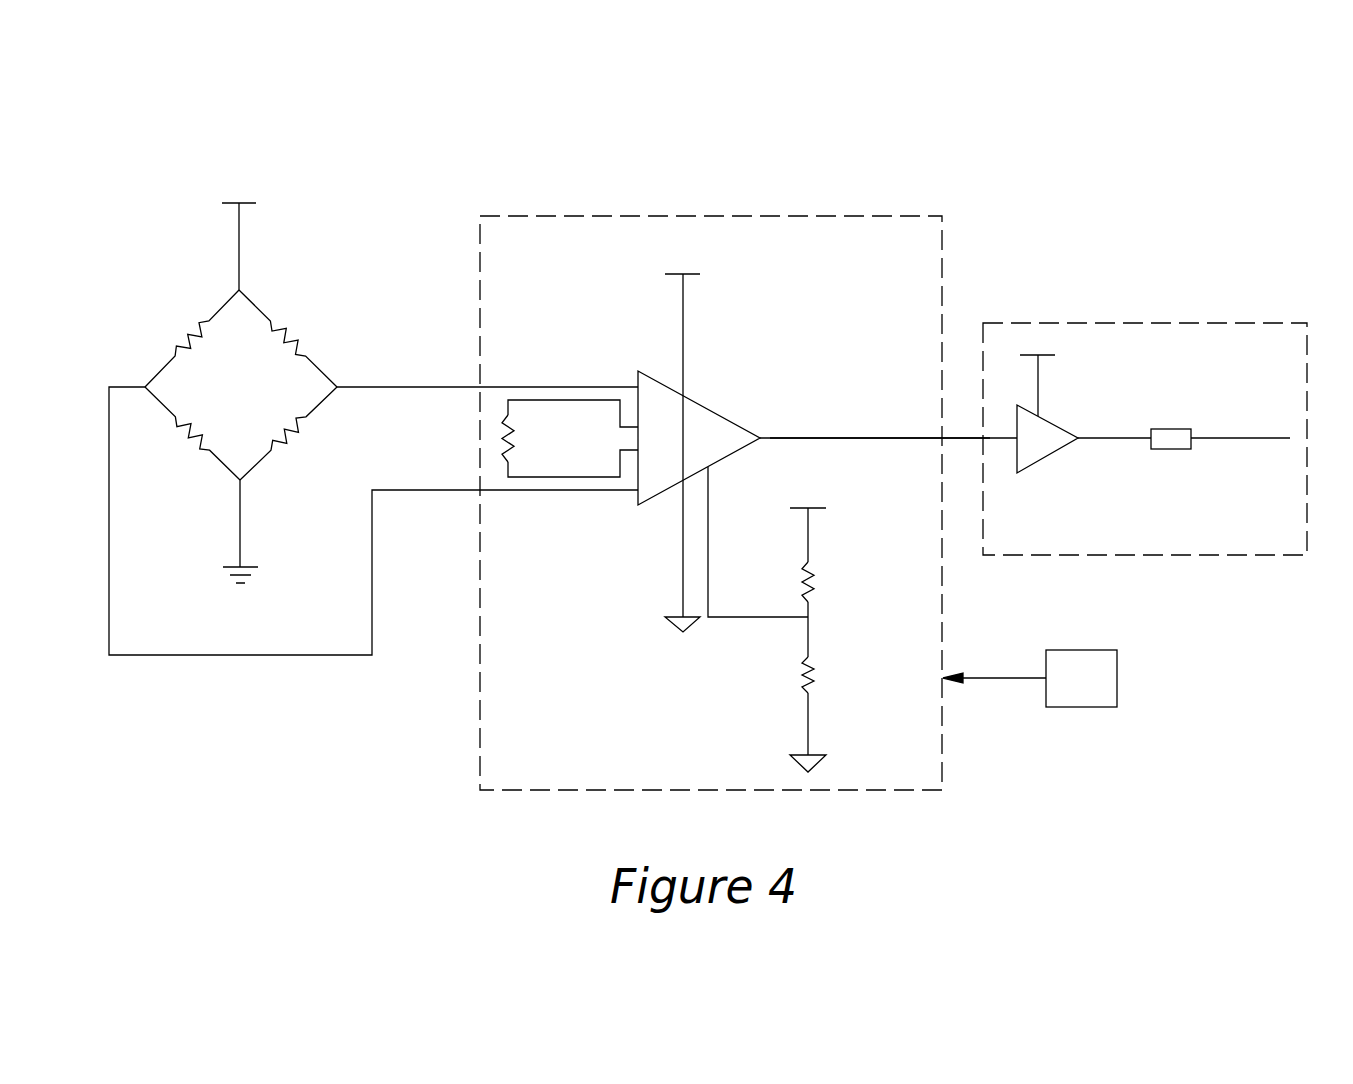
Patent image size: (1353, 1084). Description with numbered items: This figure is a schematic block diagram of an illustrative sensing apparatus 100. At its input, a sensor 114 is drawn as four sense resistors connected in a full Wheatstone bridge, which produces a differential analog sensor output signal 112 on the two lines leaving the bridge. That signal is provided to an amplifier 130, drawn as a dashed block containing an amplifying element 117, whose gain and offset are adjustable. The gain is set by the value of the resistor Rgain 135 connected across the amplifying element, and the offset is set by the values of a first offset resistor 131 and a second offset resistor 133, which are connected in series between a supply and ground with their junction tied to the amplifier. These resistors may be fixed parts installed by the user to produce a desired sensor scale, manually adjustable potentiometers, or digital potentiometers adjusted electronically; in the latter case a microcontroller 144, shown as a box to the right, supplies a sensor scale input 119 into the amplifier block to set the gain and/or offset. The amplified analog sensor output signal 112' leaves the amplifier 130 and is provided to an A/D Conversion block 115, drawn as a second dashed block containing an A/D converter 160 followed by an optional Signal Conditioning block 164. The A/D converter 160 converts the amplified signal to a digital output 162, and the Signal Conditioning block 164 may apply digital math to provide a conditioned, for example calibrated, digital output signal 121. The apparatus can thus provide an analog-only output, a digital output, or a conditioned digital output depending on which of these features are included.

The sensing apparatus 100 is at (1050, 118).
The sensor 114 is at (336, 210).
The analog sensor output signal 112 is at (373, 501).
The amplified analog sensor output signal 112' is at (880, 418).
The amplifier 130 is at (762, 216).
The amplifier 117 is at (638, 386).
The resistor Rgain 135 is at (505, 463).
The resistor Roffset1 131 is at (808, 568).
The resistor Roffset2 133 is at (808, 665).
The A/D Conversion block 115 is at (1143, 323).
The A/D converter 160 is at (1050, 455).
The digital output 162 is at (1100, 438).
The Signal Conditioning block 164 is at (1183, 429).
The conditioned digital output signal 121 is at (1235, 440).
The microcontroller 144 is at (1083, 650).
The sensor scale input 119 is at (1005, 678).